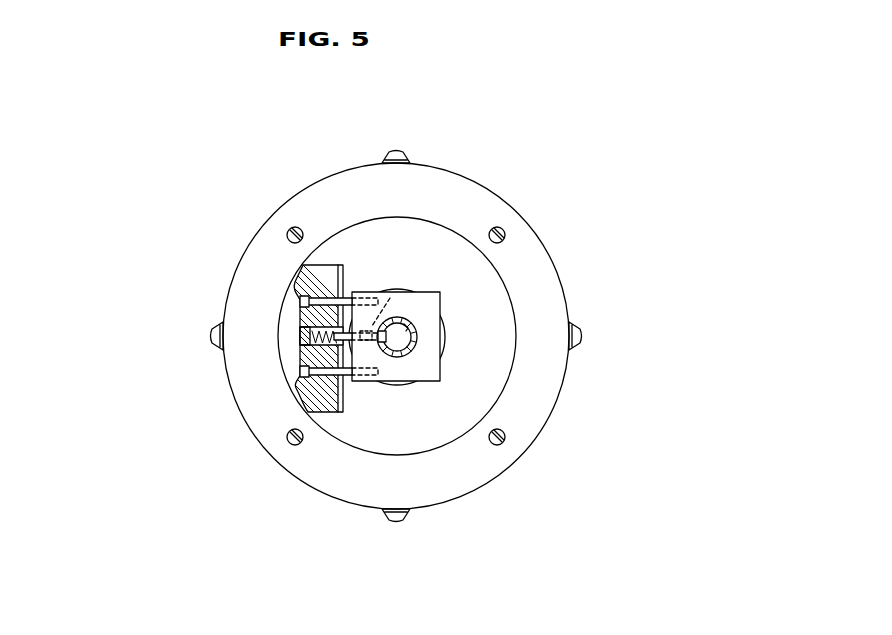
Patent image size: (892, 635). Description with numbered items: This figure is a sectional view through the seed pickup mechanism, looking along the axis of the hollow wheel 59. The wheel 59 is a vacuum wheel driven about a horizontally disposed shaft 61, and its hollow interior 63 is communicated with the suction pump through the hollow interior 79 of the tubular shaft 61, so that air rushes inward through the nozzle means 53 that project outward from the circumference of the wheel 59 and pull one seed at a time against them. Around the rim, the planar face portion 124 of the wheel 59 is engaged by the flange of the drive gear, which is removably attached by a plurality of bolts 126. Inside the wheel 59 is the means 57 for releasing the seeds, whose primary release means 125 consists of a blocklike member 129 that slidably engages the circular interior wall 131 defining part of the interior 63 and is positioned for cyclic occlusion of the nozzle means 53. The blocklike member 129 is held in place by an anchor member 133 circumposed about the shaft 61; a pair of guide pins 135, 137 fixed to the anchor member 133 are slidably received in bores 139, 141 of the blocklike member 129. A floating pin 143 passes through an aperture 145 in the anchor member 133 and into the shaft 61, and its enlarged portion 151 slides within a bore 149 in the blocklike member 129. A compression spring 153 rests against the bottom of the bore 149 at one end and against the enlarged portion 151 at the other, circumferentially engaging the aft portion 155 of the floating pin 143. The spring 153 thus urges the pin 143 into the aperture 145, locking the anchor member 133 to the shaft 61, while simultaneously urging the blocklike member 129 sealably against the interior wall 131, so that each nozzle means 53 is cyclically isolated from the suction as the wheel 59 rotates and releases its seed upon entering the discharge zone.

The nozzle means 53 is at (393, 152).
The means for releasing the seeds 57 is at (263, 383).
The hollow wheel 59 is at (596, 168).
The horizontally disposed shaft 61 is at (418, 333).
The hollow interior 63 is at (476, 413).
The hollow interior of the shaft 79 is at (406, 326).
The planar face portion 124 is at (337, 482).
The primary release means 125 is at (190, 255).
The bolts 126 is at (290, 232).
The blocklike member 129 is at (322, 268).
The circular interior wall 131 is at (509, 369).
The anchor member 133 is at (427, 363).
The guide pin 135 is at (352, 300).
The guide pin 137 is at (325, 392).
The bore 139 is at (300, 297).
The bore 141 is at (300, 373).
The floating pin 143 is at (388, 341).
The aperture 145 is at (390, 298).
The bore 149 is at (303, 345).
The enlarged portion 151 is at (341, 296).
The compression spring 153 is at (300, 332).
The aft portion 155 is at (302, 341).